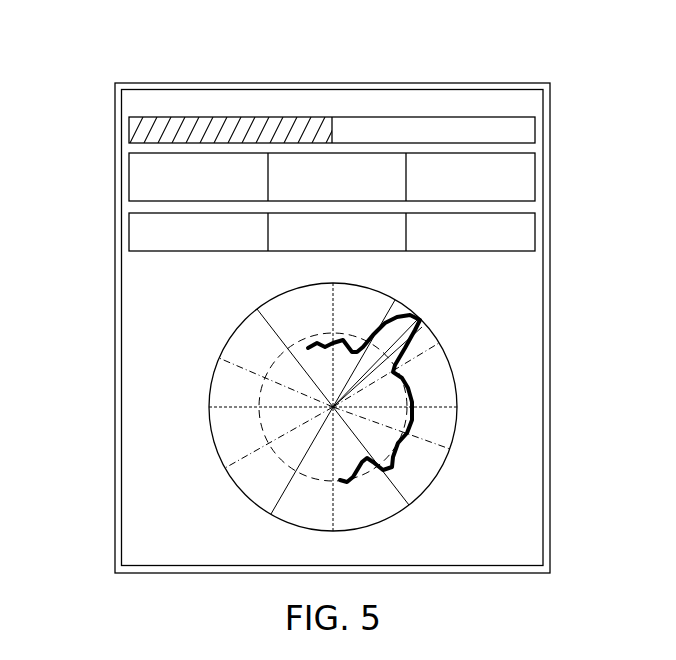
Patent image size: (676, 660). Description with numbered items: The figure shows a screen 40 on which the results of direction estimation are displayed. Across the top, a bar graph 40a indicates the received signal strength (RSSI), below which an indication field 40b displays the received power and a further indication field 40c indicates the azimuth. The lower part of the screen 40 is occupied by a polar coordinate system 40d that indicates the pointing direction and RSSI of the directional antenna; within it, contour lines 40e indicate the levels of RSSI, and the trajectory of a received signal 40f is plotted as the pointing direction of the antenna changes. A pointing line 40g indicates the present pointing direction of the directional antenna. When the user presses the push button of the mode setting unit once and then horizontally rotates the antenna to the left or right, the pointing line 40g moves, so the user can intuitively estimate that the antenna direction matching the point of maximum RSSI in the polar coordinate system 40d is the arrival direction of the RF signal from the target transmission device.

The screen 40 is at (55, 42).
The bar graph 40a is at (130, 127).
The indication field 40b is at (130, 177).
The indication field 40c is at (130, 226).
The polar coordinate system 40d is at (232, 335).
The contour lines 40e is at (243, 460).
The trajectory of a received signal 40f is at (448, 448).
The pointing line 40g is at (425, 322).